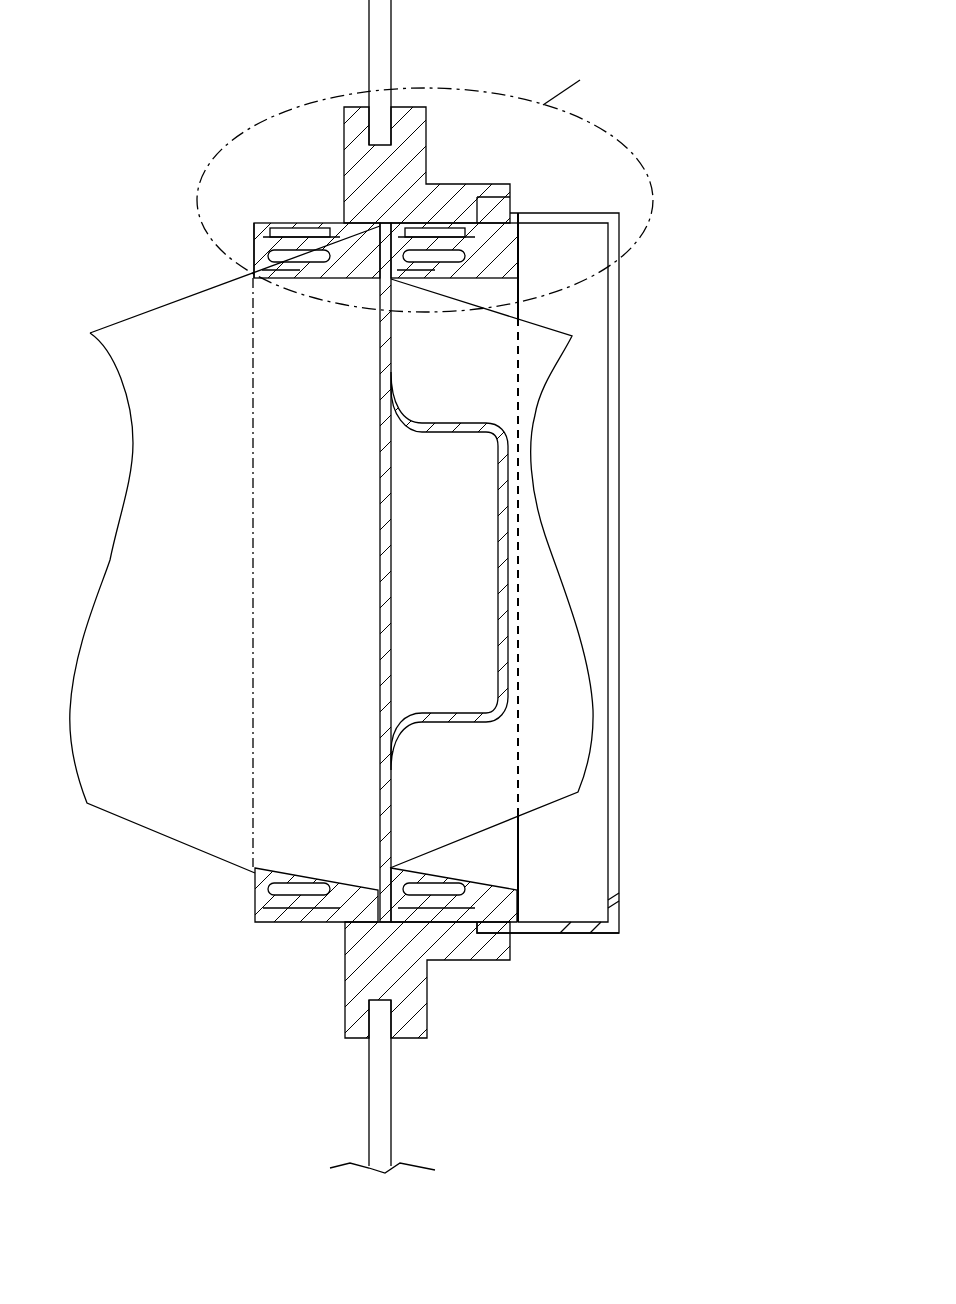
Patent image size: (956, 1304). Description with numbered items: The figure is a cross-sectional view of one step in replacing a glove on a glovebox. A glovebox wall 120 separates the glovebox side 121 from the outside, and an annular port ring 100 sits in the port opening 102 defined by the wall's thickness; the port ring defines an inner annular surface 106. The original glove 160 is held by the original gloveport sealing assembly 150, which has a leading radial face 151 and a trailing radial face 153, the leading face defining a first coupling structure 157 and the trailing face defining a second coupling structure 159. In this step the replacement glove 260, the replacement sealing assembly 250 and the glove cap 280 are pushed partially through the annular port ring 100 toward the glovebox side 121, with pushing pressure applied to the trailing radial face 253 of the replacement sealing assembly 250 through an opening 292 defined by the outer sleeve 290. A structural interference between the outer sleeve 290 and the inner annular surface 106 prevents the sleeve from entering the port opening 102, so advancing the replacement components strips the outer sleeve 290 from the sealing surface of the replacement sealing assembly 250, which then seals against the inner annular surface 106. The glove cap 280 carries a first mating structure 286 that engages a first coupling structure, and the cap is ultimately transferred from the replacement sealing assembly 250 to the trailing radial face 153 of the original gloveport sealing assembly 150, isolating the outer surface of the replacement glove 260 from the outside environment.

The glovebox side 121 is at (233, 40).
The glovebox wall 120 is at (380, 78).
The trailing radial face 153 is at (440, 232).
The gloveport sealing assembly 150 is at (298, 222).
The second coupling structure 159 is at (367, 277).
The first coupling structure 157 is at (253, 256).
The leading radial face 151 is at (212, 237).
The inner annular surface 106 is at (380, 246).
The annular port ring 100 is at (468, 195).
The first mating structure 286 is at (478, 209).
The outer sleeve 290 is at (618, 230).
The opening 292 is at (585, 515).
The trailing radial face 253 is at (520, 223).
The replacement sealing assembly 250 is at (457, 271).
The replacement glove 260 is at (548, 325).
The glove 160 is at (112, 548).
The port opening 102 is at (285, 620).
The glove cap 280 is at (407, 412).